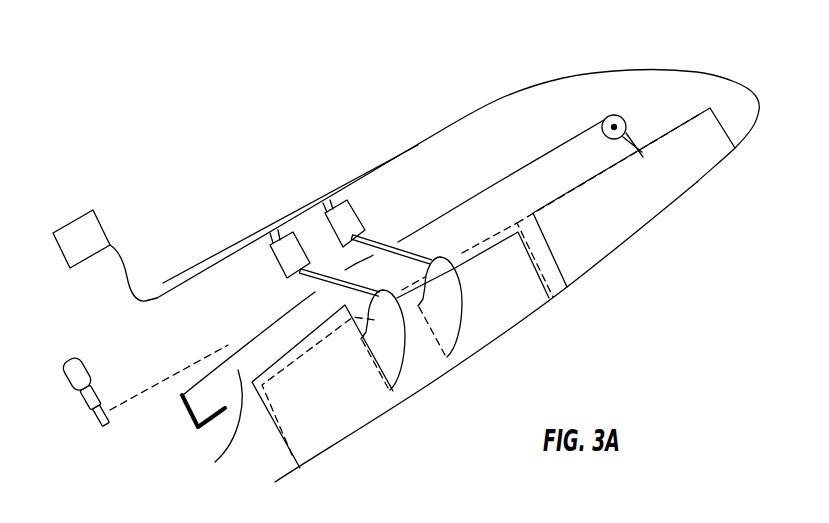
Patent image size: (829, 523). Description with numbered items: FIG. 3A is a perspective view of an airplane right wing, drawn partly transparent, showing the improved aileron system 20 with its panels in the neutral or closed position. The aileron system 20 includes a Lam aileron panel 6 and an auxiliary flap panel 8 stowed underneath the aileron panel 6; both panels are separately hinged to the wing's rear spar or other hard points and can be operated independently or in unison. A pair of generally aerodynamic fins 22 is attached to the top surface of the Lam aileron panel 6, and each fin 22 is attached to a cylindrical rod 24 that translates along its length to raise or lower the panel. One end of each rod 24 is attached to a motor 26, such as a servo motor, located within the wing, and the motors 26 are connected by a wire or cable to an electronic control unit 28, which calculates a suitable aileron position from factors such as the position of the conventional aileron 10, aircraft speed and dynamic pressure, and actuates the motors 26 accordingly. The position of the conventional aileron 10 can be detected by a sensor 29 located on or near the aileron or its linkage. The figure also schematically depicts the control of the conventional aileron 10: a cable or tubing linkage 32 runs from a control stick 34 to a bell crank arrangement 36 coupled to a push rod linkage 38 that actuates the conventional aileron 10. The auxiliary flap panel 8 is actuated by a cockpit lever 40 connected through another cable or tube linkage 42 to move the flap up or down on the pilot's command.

The Lam aileron panel 6 is at (513, 313).
The auxiliary flap panel 8 is at (289, 449).
The conventional aileron 10 is at (642, 215).
The aileron system 20 is at (533, 35).
The fins 22 is at (398, 375).
The rod 24 is at (376, 240).
The motor 26 is at (342, 200).
The electronic control unit 28 is at (72, 220).
The sensor 29 is at (607, 117).
The cable or tubing linkage 32 is at (493, 180).
The control stick 34 is at (70, 353).
The bell crank arrangement 36 is at (617, 115).
The push rod linkage 38 is at (634, 138).
The cockpit lever 40 is at (183, 413).
The cable or tube linkage 42 is at (215, 462).